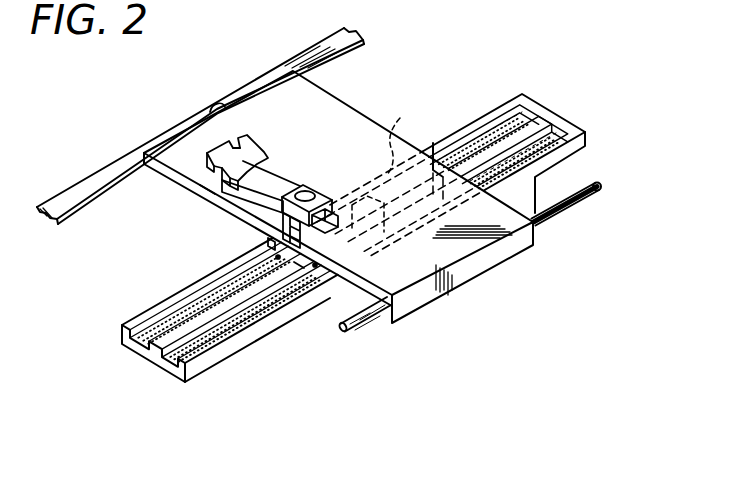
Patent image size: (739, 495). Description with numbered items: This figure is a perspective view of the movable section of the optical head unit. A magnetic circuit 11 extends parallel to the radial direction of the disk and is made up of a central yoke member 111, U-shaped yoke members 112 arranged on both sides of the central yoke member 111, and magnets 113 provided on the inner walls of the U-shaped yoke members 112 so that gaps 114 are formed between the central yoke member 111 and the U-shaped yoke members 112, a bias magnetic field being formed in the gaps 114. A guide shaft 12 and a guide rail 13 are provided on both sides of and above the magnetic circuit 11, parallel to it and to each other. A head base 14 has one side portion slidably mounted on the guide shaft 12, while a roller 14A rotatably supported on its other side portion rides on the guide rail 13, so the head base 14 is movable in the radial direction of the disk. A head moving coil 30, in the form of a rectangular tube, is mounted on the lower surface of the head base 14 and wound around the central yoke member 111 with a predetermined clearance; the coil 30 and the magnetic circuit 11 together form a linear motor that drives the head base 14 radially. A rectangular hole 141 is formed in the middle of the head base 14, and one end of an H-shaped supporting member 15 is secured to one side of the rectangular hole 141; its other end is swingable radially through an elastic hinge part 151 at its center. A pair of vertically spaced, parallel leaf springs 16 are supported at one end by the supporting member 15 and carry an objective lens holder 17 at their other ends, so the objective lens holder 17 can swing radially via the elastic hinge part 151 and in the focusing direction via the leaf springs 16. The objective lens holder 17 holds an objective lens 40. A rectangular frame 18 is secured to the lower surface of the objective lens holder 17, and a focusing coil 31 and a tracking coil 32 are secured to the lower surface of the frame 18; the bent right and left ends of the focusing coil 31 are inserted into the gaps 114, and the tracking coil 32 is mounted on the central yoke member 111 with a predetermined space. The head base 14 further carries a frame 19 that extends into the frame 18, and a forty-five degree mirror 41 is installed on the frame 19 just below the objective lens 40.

The magnetic circuit 11 is at (546, 96).
The guide shaft 12 is at (378, 322).
The guide rail 13 is at (107, 173).
The head base 14 is at (337, 115).
The roller 14A is at (212, 107).
The supporting member 15 is at (226, 145).
The elastic hinge part 151 is at (247, 151).
The leaf springs 16 is at (276, 180).
The objective lens holder 17 is at (304, 187).
The rectangular frame 18 is at (260, 233).
The frame 19 is at (270, 245).
The head moving coil 30 is at (382, 164).
The focusing coil 31 is at (300, 270).
The tracking coil 32 is at (315, 267).
The objective lens 40 is at (320, 189).
The 45° mirror 41 is at (278, 259).
The central yoke member 111 is at (560, 120).
The U-shaped yoke members 112 is at (532, 101).
The magnets 113 is at (507, 120).
The gaps 114 is at (480, 133).
The rectangular hole 141 is at (210, 194).